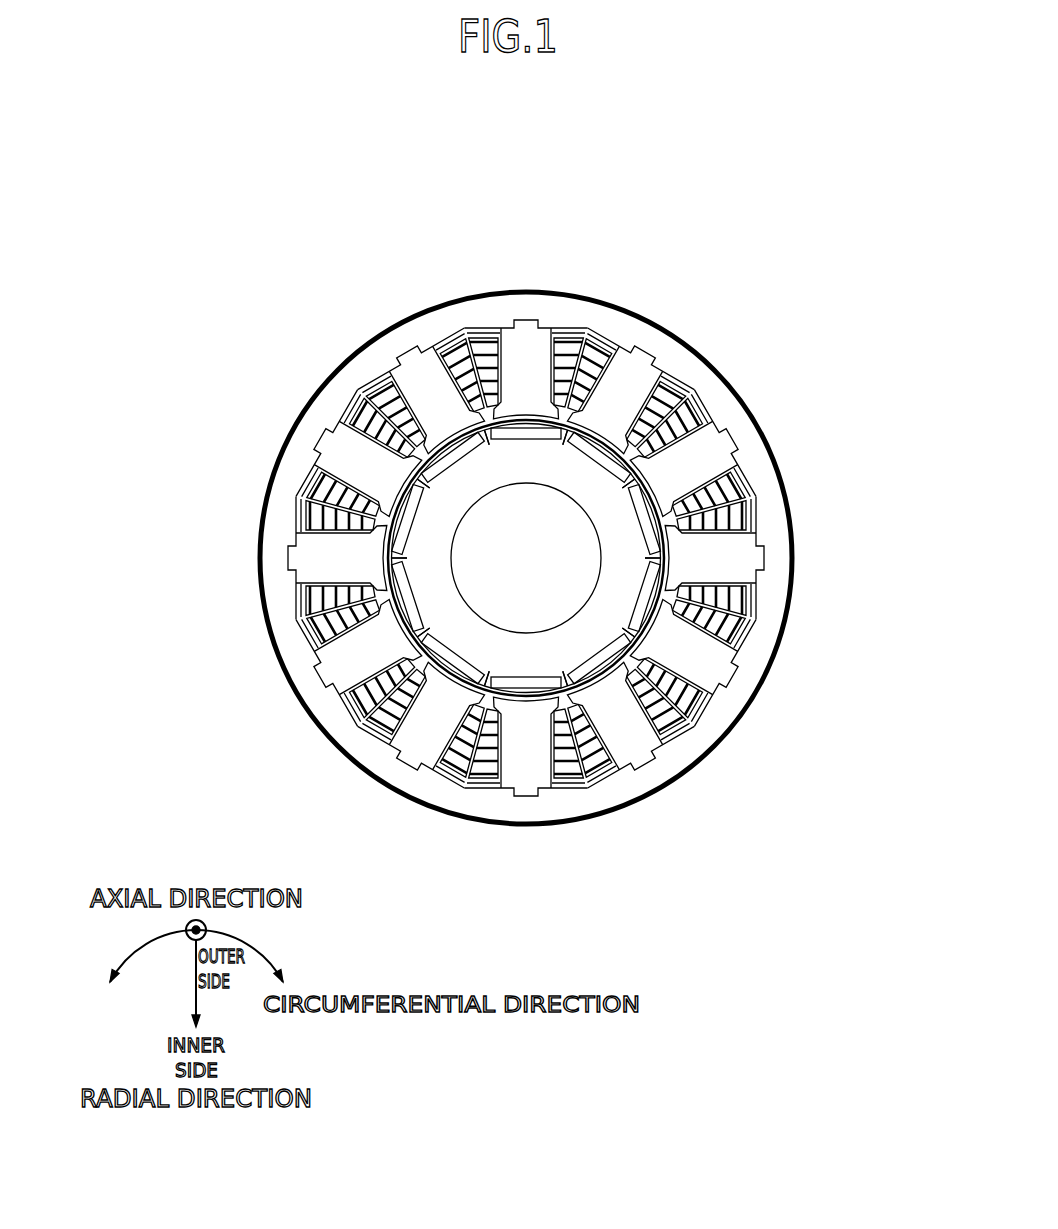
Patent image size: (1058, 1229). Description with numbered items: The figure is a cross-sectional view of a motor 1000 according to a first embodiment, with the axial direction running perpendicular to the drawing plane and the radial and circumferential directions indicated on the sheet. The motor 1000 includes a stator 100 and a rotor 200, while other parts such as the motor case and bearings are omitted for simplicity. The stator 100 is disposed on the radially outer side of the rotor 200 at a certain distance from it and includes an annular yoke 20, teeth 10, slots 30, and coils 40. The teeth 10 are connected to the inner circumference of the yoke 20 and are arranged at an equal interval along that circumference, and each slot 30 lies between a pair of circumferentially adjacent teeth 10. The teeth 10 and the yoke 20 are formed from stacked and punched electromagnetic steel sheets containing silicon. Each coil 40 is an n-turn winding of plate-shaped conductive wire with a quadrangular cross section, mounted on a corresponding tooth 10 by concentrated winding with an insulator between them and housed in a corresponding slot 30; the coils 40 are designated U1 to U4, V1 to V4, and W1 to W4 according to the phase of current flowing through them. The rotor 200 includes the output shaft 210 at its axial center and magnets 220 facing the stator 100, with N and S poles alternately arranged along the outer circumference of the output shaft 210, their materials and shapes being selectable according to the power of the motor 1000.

The motor 1000 is at (275, 225).
The stator 100 is at (750, 198).
The teeth 10 is at (503, 330).
The yoke 20 is at (535, 307).
The slots 30 is at (556, 318).
The coils 40 is at (584, 331).
The rotor 200 is at (440, 568).
The output shaft 210 is at (549, 570).
The magnets 220 is at (452, 457).